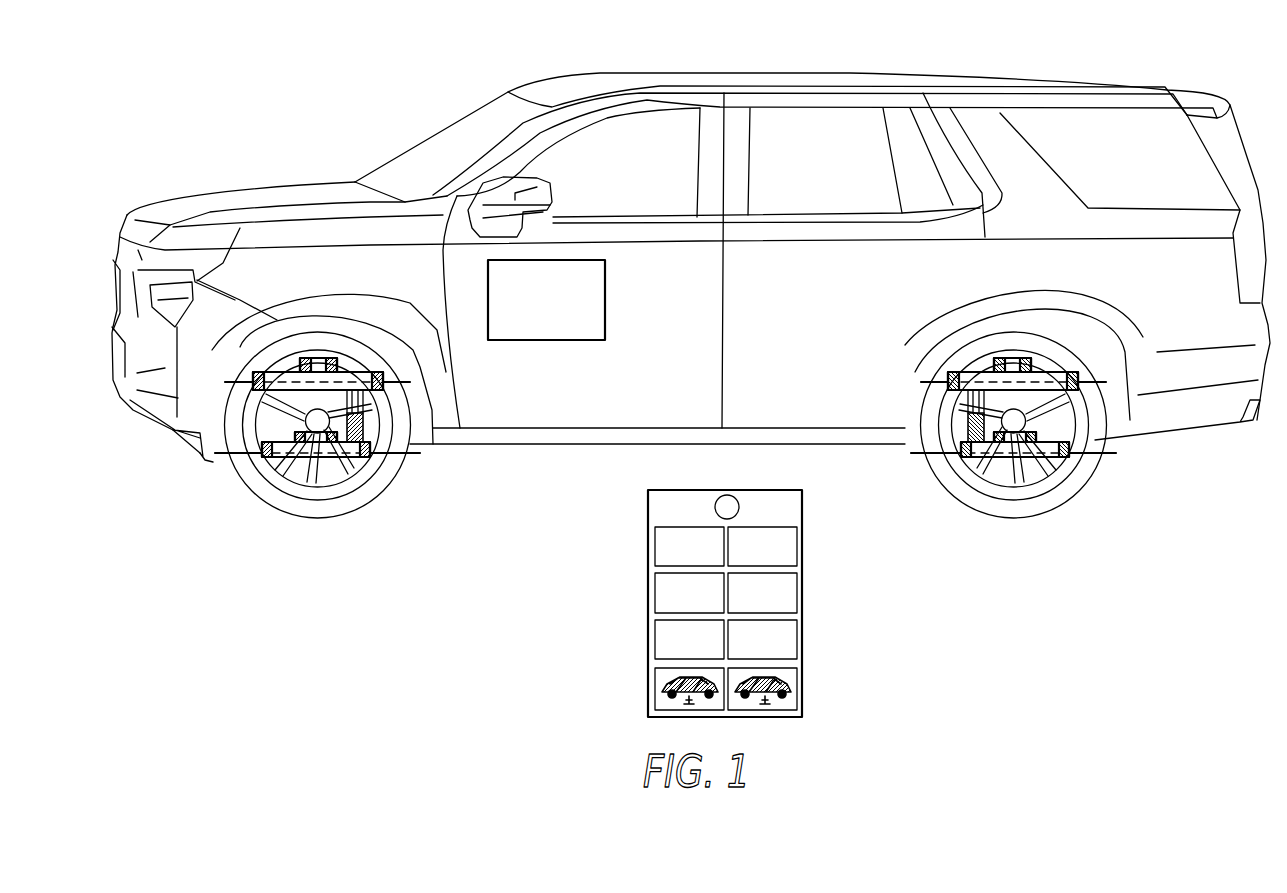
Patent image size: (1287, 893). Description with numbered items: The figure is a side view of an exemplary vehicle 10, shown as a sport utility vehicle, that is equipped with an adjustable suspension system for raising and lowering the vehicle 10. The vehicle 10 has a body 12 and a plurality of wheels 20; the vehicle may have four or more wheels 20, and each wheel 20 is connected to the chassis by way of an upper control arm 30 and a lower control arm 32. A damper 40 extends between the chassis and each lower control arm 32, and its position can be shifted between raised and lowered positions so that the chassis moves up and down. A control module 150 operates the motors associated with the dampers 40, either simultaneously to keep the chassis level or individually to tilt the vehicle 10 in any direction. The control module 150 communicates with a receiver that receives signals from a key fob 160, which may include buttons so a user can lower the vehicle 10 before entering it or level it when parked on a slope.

The vehicle 10 is at (691, 248).
The body 12 is at (343, 232).
The wheels 20 is at (347, 508).
The upper control arm 30 is at (256, 391).
The lower control arm 32 is at (310, 458).
The damper 40 is at (362, 424).
The control module 150 is at (605, 298).
The key fob 160 is at (802, 591).